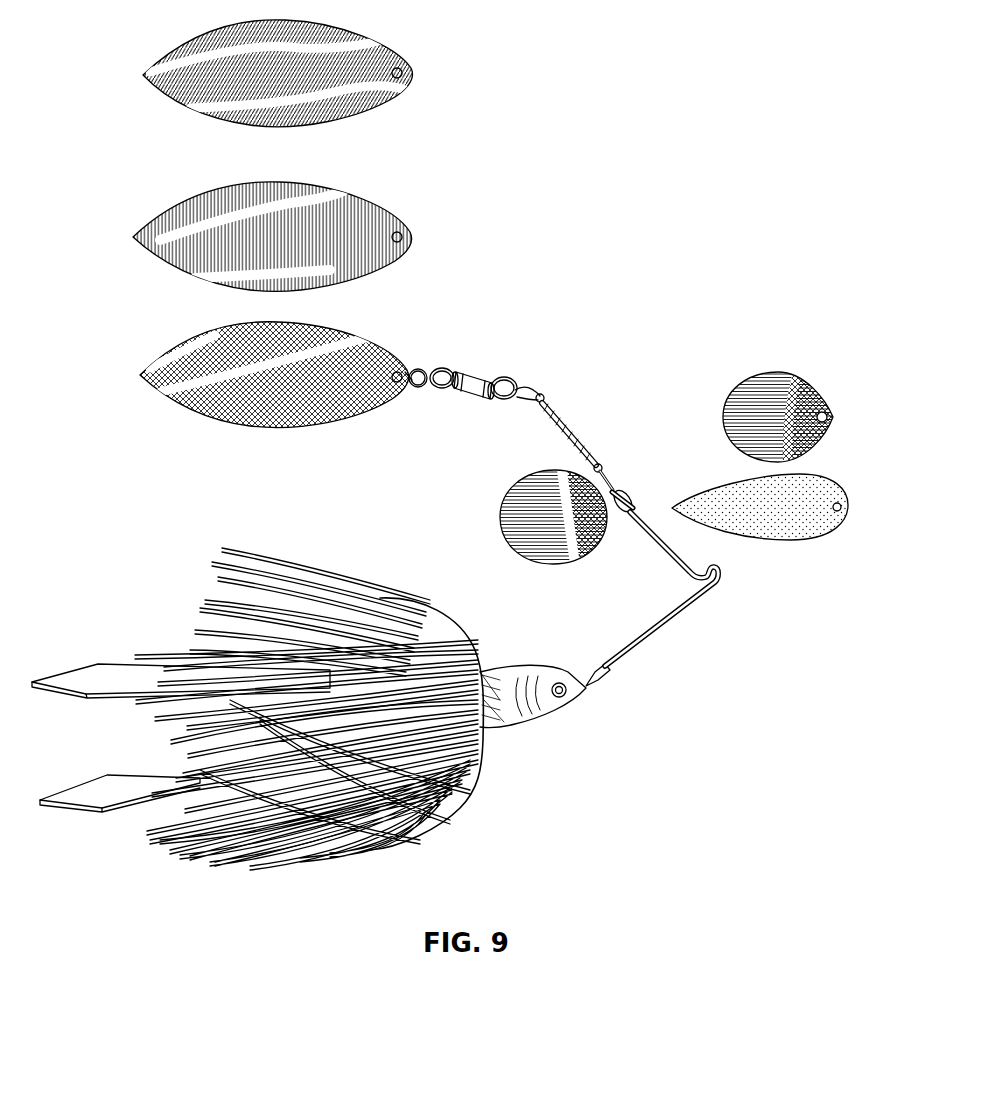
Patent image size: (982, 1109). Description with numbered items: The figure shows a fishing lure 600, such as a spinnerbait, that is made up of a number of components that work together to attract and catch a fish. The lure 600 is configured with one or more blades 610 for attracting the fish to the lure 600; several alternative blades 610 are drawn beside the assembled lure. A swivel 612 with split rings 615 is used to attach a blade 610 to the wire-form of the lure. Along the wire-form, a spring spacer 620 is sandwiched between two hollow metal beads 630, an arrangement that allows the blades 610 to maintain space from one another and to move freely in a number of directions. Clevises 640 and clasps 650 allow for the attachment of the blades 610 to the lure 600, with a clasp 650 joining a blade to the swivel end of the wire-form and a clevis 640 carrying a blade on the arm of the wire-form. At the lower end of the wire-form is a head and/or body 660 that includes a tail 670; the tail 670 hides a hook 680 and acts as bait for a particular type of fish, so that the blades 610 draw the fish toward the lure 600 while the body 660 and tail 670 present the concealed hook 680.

The fishing lure 600 is at (616, 268).
The blades 610 is at (143, 373).
The swivel 612 is at (478, 395).
The split rings 615 is at (508, 377).
The spring spacer 620 is at (557, 430).
The hollow metal beads 630 is at (537, 395).
The clevises 640 is at (637, 500).
The clasps 650 is at (423, 368).
The head and/or body 660 is at (535, 720).
The tail 670 is at (380, 607).
The hook 680 is at (250, 638).